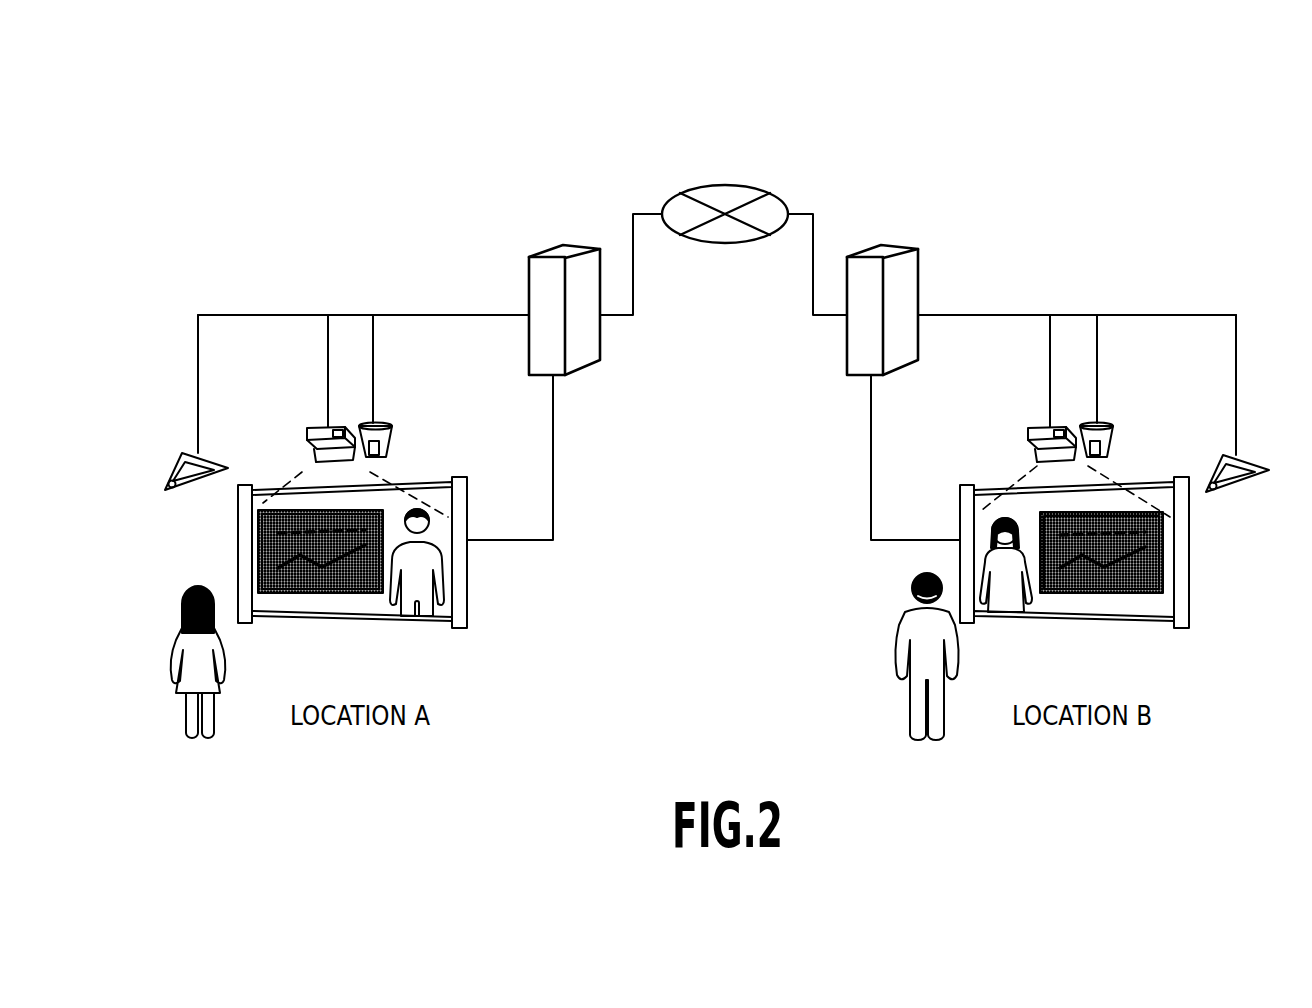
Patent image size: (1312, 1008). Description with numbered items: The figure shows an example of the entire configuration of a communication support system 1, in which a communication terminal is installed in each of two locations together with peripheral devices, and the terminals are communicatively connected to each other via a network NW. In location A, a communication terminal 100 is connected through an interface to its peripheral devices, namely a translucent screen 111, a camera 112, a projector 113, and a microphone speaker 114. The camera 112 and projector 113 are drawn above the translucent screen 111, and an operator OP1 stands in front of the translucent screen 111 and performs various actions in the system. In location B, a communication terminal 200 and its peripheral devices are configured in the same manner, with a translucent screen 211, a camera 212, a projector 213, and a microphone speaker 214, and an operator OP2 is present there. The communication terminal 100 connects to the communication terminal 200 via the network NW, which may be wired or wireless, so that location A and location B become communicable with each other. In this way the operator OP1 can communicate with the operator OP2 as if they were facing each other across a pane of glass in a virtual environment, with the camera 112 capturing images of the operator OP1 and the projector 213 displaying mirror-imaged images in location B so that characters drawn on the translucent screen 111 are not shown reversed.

The communication support system 1 is at (814, 144).
The network NW is at (733, 186).
The communication terminal 100 is at (567, 246).
The communication terminal 200 is at (886, 246).
The translucent screen 111 is at (468, 588).
The camera 112 is at (392, 423).
The projector 113 is at (305, 437).
The microphone speaker 114 is at (172, 463).
The translucent screen 211 is at (1190, 588).
The camera 212 is at (1115, 423).
The projector 213 is at (1027, 437).
The microphone speaker 214 is at (1253, 456).
The operator OP1 is at (182, 711).
The operator OP2 is at (908, 711).